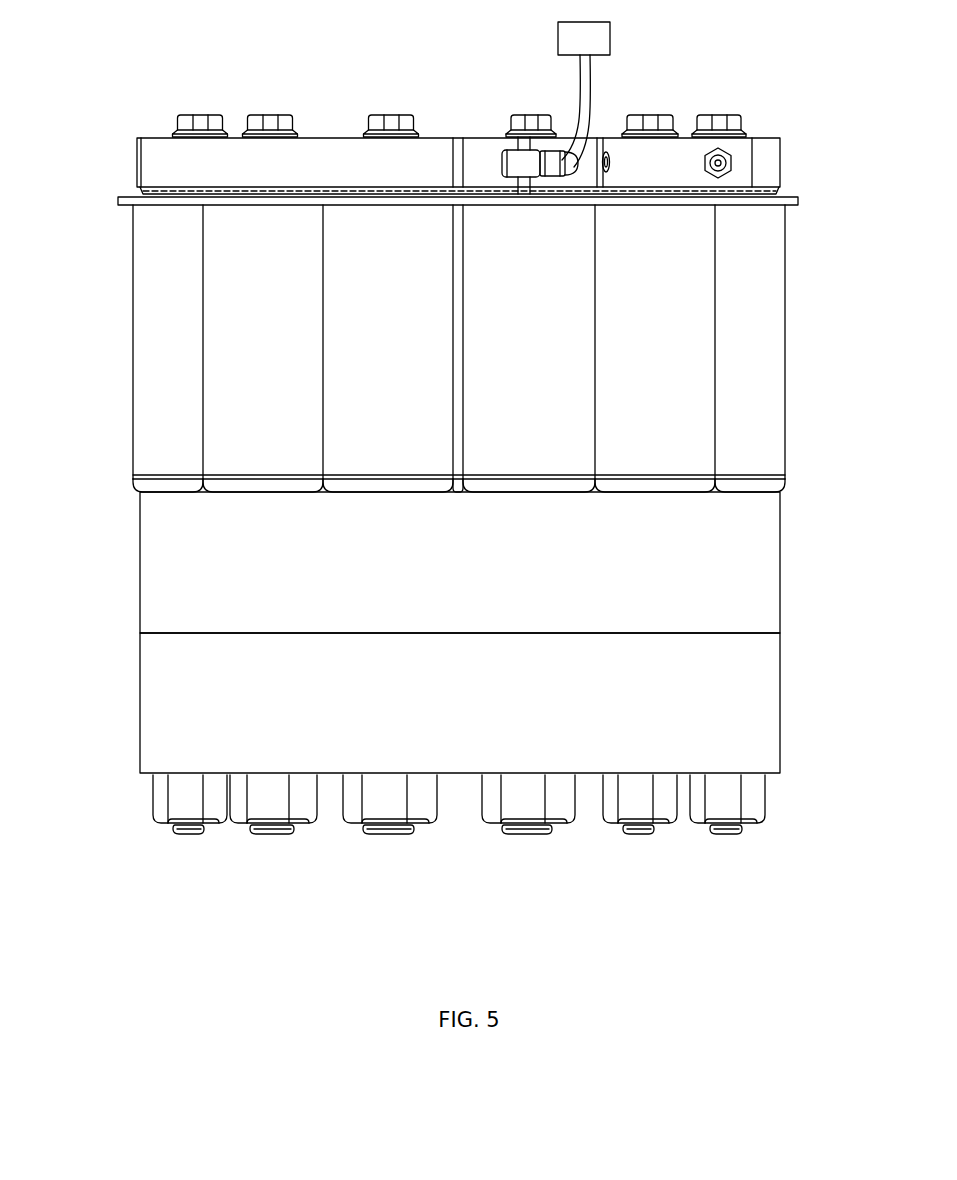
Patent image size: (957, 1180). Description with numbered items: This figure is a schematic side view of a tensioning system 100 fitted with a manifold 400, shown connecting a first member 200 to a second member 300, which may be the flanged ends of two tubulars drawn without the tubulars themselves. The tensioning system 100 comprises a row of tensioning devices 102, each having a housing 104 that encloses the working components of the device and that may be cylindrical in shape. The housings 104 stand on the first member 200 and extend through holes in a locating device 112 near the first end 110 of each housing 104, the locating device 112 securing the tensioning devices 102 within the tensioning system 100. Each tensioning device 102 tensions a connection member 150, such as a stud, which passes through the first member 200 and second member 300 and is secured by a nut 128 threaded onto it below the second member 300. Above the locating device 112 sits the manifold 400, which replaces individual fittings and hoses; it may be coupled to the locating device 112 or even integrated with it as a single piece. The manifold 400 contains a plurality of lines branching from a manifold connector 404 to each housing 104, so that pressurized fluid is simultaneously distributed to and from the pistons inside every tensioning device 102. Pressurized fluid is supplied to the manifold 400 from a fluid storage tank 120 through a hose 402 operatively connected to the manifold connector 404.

The tensioning system 100 is at (158, 91).
The tensioning device 102 is at (241, 384).
The housing 104 is at (247, 317).
The first end 110 is at (238, 208).
The locating device 112 is at (798, 200).
The fluid storage tank 120 is at (566, 49).
The nut 128 is at (183, 812).
The connection member 150 is at (203, 834).
The first member 200 is at (440, 562).
The second member 300 is at (440, 705).
The manifold 400 is at (163, 165).
The hose 402 is at (592, 80).
The manifold connector 404 is at (507, 163).